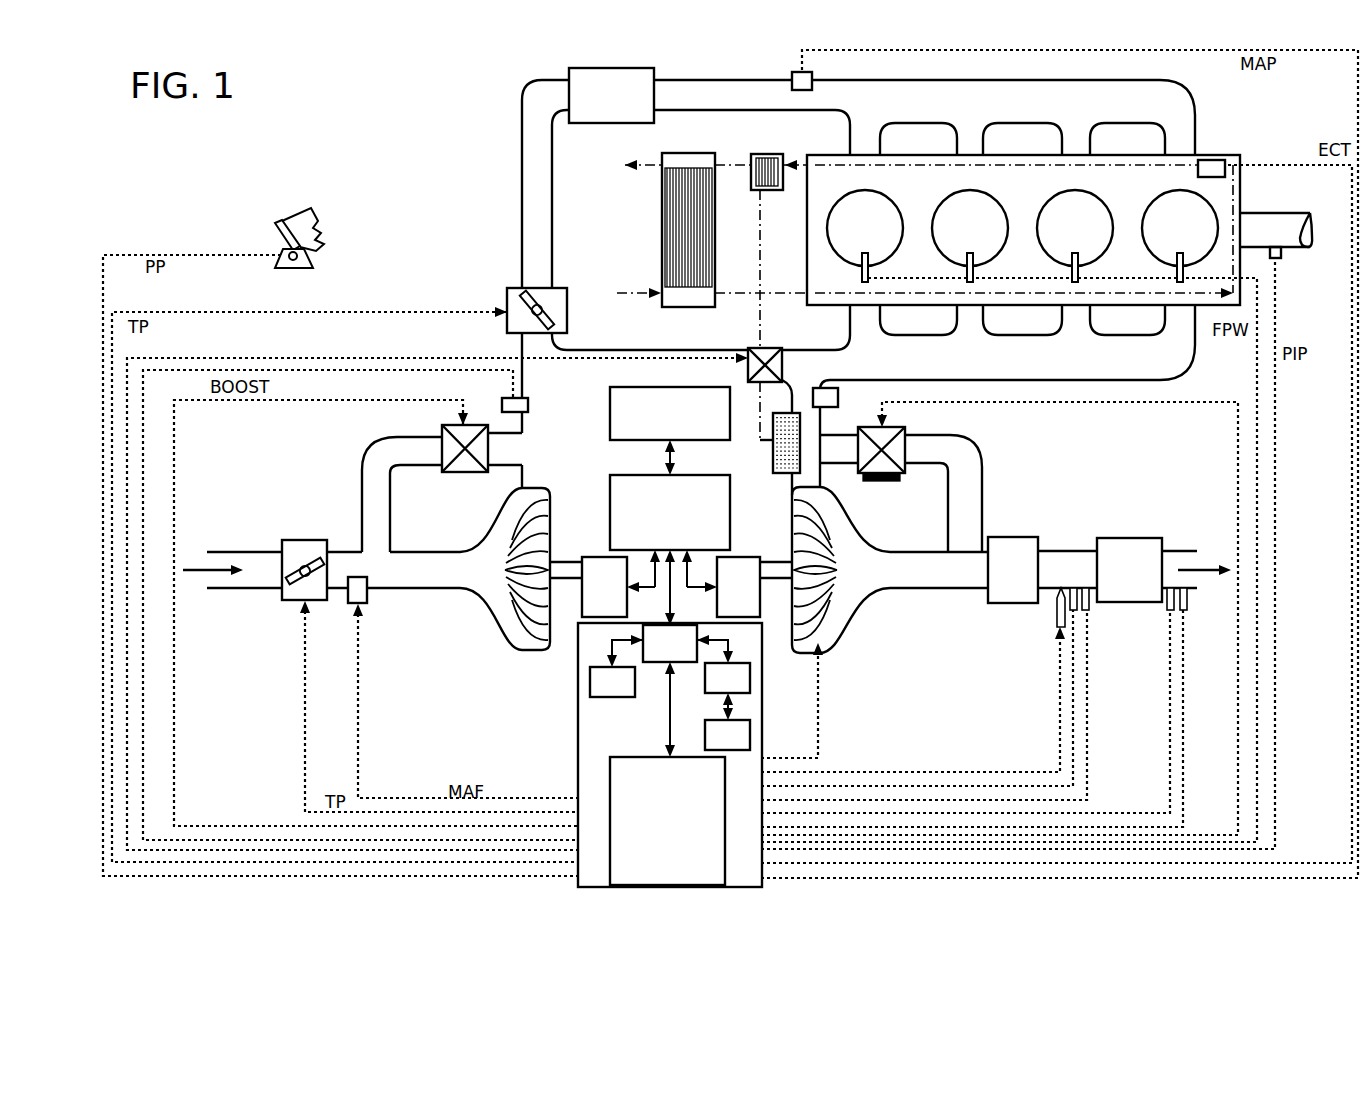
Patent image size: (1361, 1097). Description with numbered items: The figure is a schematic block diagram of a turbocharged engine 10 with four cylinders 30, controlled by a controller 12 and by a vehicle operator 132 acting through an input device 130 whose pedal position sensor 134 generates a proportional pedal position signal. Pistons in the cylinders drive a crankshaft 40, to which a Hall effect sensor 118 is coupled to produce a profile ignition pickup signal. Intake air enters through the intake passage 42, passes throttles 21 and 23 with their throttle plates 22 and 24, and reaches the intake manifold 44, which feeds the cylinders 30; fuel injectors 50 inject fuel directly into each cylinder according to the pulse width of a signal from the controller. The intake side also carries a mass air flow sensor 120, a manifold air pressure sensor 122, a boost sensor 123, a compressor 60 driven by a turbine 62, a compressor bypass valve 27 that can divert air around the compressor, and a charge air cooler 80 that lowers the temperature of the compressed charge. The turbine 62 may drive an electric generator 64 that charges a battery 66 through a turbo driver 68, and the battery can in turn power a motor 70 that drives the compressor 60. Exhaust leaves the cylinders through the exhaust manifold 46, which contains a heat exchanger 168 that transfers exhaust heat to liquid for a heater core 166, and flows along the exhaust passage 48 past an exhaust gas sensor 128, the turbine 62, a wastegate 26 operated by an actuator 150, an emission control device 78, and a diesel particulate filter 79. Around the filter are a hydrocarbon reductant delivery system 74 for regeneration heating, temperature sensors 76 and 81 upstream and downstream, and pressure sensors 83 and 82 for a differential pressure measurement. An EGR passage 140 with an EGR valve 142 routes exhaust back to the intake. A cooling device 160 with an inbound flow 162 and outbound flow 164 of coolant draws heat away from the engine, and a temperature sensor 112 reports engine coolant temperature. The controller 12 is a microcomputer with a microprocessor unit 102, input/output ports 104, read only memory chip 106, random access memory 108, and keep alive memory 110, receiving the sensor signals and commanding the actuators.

The engine 10 is at (1023, 230).
The controller 12 is at (670, 755).
The throttle 21 is at (292, 540).
The throttle plate 22 is at (313, 560).
The throttle 23 is at (509, 290).
The throttle plate 24 is at (552, 322).
The wastegate 26 is at (908, 436).
The compressor bypass valve 27 is at (441, 432).
The cylinder 30 is at (1022, 228).
The crankshaft 40 is at (1285, 213).
The intake passage 42 is at (321, 570).
The intake manifold 44 is at (1021, 121).
The exhaust manifold 46 is at (1008, 336).
The exhaust passage 48 is at (936, 569).
The fuel injector 50 is at (966, 270).
The compressor 60 is at (510, 620).
The turbine 62 is at (838, 526).
The electric generator 64 is at (738, 587).
The battery 66 is at (611, 432).
The turbo driver 68 is at (715, 478).
The motor 70 is at (604, 587).
The hydrocarbon reductant delivery system 74 is at (1058, 627).
The temperature sensor 76 is at (1075, 612).
The emission control device 78 is at (1013, 570).
The diesel particulate filter 79 is at (1138, 538).
The charge air cooler 80 is at (632, 68).
The temperature sensor 81 is at (1172, 612).
The pressure sensor 82 is at (1184, 612).
The pressure sensor 83 is at (1086, 612).
The microprocessor unit 102 is at (641, 640).
The input/output ports 104 is at (667, 821).
The read only memory chip 106 is at (590, 692).
The random access memory 108 is at (750, 662).
The keep alive memory 110 is at (752, 720).
The temperature sensor 112 is at (1218, 160).
The Hall effect sensor 118 is at (1282, 258).
The mass air flow sensor 120 is at (368, 600).
The manifold air pressure sensor 122 is at (793, 74).
The sensor 123 is at (503, 400).
The exhaust gas sensor 128 is at (840, 395).
The input device 130 is at (277, 230).
The vehicle operator 132 is at (320, 222).
The pedal position sensor 134 is at (308, 258).
The EGR passage 140 is at (648, 350).
The EGR valve 142 is at (770, 348).
The actuator 150 is at (898, 481).
The cooling device 160 is at (704, 153).
The inbound flow 162 is at (634, 292).
The outbound flow 164 is at (623, 172).
The heater core 166 is at (770, 154).
The heat exchanger 168 is at (780, 478).